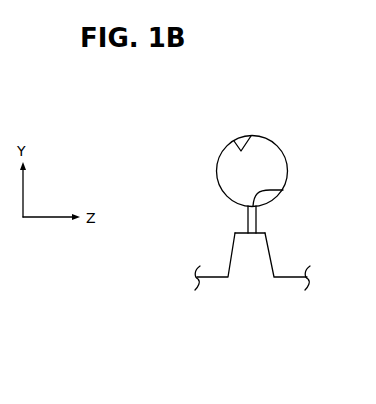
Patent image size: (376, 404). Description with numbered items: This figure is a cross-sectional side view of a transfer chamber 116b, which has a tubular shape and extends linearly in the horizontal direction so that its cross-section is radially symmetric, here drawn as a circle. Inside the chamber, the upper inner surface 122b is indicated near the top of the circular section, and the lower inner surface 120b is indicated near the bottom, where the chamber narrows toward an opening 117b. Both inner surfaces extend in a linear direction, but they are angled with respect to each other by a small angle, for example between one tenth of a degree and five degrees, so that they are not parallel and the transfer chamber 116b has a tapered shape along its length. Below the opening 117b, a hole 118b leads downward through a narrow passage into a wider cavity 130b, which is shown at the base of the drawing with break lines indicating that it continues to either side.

The transfer chamber 116b is at (263, 150).
The upper inner surface 122b is at (236, 139).
The opening 117b is at (283, 190).
The lower inner surface 120b is at (247, 206).
The hole 118b is at (248, 215).
The cavity 130b is at (250, 266).